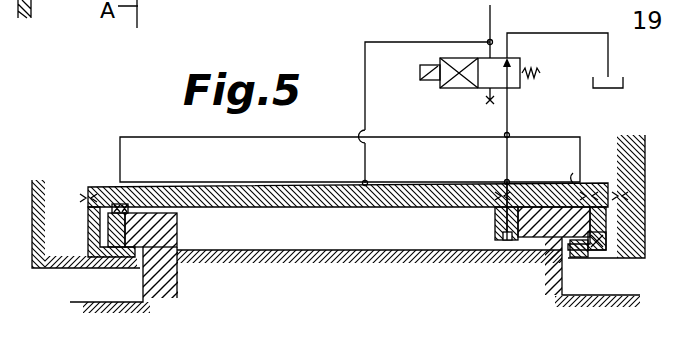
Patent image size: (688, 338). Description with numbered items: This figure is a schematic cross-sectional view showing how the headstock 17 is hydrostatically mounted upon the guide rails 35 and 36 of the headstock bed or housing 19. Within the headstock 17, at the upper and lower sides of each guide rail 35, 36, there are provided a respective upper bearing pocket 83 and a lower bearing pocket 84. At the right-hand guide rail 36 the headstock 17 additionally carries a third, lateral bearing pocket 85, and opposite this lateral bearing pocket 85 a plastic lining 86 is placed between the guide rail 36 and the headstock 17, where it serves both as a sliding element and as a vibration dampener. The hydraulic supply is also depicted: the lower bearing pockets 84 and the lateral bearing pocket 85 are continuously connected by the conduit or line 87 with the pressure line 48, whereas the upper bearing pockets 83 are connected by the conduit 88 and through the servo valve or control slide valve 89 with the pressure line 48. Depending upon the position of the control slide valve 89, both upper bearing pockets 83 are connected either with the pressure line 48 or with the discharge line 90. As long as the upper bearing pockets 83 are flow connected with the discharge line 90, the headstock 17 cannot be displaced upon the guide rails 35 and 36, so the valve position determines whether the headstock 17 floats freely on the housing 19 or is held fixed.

The headstock 17 is at (100, 170).
The headstock bed or housing 19 is at (286, 247).
The guide rail 35 is at (165, 235).
The guide rail 36 is at (545, 226).
The pressure line 48 is at (458, 40).
The upper bearing pocket 83 is at (128, 206).
The lower bearing pocket 84 is at (130, 243).
The lateral bearing pocket 85 is at (505, 240).
The plastic lining 86 is at (603, 249).
The conduit or line 87 is at (229, 186).
The conduit 88 is at (508, 108).
The servo valve or control slide valve 89 is at (520, 87).
The discharge line 90 is at (557, 37).